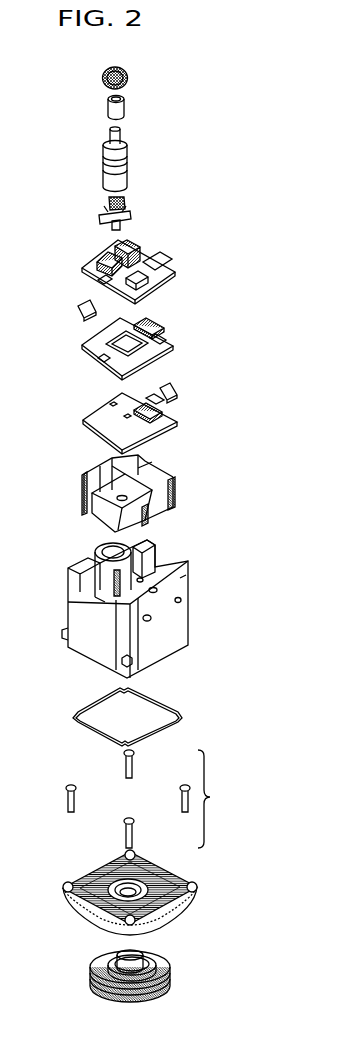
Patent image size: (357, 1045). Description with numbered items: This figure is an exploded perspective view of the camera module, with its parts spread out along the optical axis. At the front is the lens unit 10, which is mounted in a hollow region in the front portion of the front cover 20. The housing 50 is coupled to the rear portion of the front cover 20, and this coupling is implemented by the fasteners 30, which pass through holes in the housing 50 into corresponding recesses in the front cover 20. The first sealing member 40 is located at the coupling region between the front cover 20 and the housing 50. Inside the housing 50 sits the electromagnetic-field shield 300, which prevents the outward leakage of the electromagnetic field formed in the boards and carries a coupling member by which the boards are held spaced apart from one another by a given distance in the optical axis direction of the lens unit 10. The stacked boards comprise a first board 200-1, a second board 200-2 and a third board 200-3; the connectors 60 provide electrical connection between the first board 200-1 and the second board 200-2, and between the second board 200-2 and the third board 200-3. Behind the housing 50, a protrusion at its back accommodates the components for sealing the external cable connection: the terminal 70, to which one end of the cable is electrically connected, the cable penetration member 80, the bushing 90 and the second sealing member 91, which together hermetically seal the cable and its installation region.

The lens unit 10 is at (172, 990).
The front cover 20 is at (199, 912).
The fasteners 30 is at (148, 799).
The first sealing member 40 is at (184, 718).
The housing 50 is at (172, 628).
The connectors 60 is at (80, 316).
The terminal 70 is at (100, 214).
The cable penetration member 80 is at (102, 170).
The bushing 90 is at (106, 110).
The second sealing member 91 is at (100, 80).
The first board 200-1 is at (178, 426).
The second board 200-2 is at (175, 352).
The third board 200-3 is at (176, 273).
The electromagnetic-field shield 300 is at (176, 500).